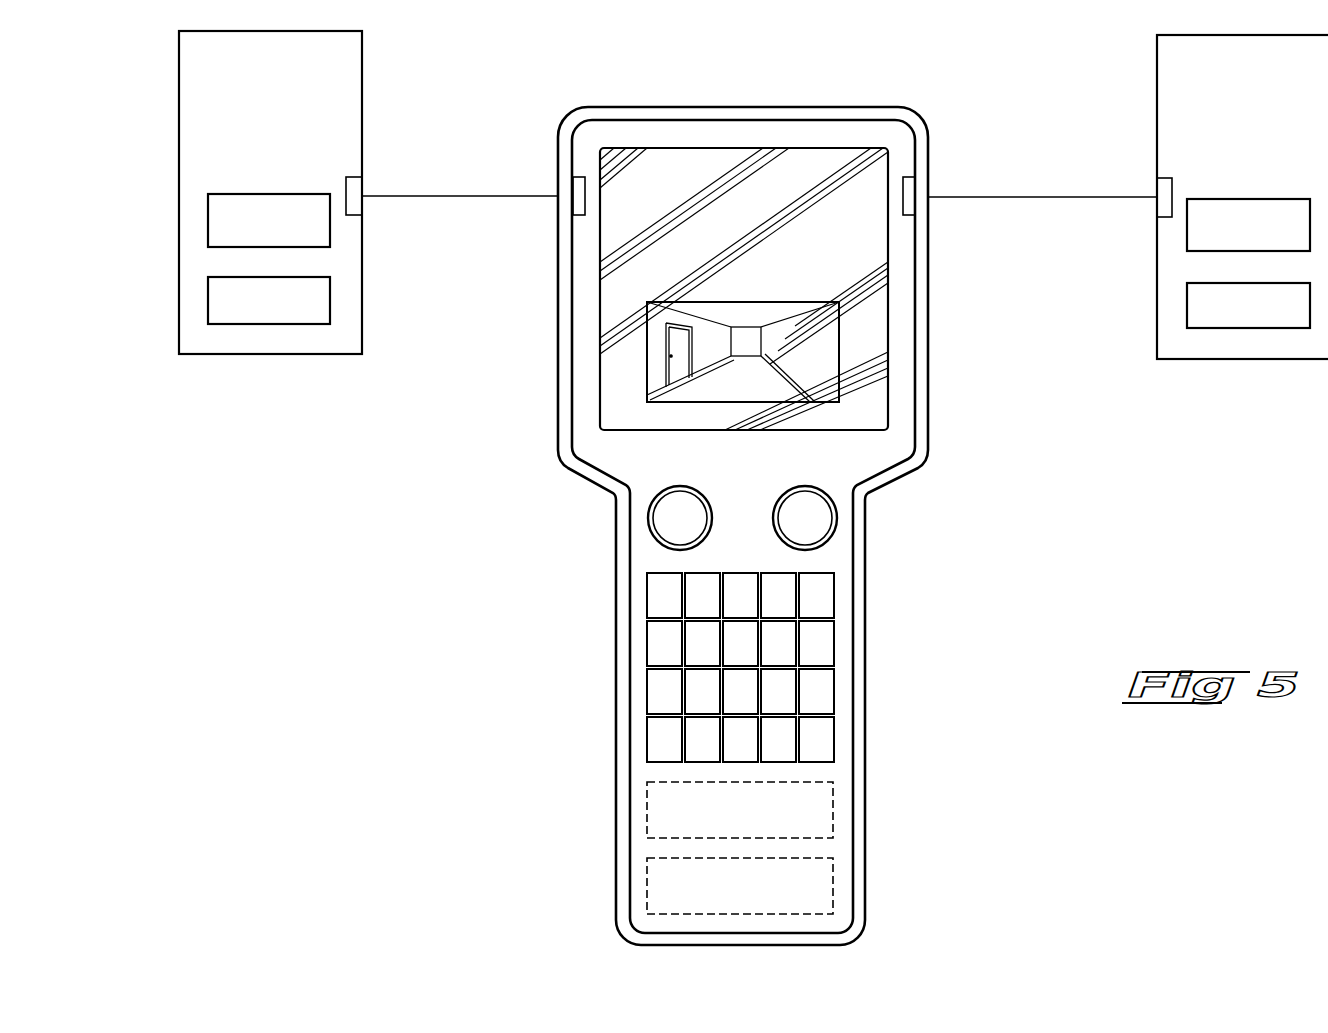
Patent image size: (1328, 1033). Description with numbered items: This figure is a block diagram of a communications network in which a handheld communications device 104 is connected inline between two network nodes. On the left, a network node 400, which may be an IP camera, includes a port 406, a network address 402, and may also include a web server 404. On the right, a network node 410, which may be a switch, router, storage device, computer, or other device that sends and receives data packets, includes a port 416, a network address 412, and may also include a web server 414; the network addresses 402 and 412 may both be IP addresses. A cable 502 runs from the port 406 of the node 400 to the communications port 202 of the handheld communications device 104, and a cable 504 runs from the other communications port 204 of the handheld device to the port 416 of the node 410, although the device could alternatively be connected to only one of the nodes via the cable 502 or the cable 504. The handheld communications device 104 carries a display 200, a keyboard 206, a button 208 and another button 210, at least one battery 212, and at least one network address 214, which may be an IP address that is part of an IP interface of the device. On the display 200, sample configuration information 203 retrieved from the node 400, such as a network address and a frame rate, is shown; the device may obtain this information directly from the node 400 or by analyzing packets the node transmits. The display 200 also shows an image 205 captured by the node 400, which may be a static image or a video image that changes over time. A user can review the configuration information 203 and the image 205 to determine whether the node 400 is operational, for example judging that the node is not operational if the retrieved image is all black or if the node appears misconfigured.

The handheld communications device 104 is at (746, 100).
The display 200 is at (833, 158).
The communications port 202 is at (576, 216).
The sample configuration information 203 is at (627, 227).
The communications port 204 is at (910, 192).
The image 205 is at (647, 383).
The keyboard 206 is at (817, 647).
The button 208 is at (658, 522).
The button 210 is at (825, 525).
The battery 212 is at (833, 805).
The network address 214 is at (833, 890).
The network node 400 is at (290, 142).
The network address 402 is at (288, 233).
The web server 404 is at (288, 313).
The port 406 is at (354, 185).
The network node 410 is at (1233, 156).
The network address 412 is at (1265, 237).
The web server 414 is at (1265, 319).
The port 416 is at (1165, 178).
The cable 502 is at (447, 195).
The cable 504 is at (1080, 198).